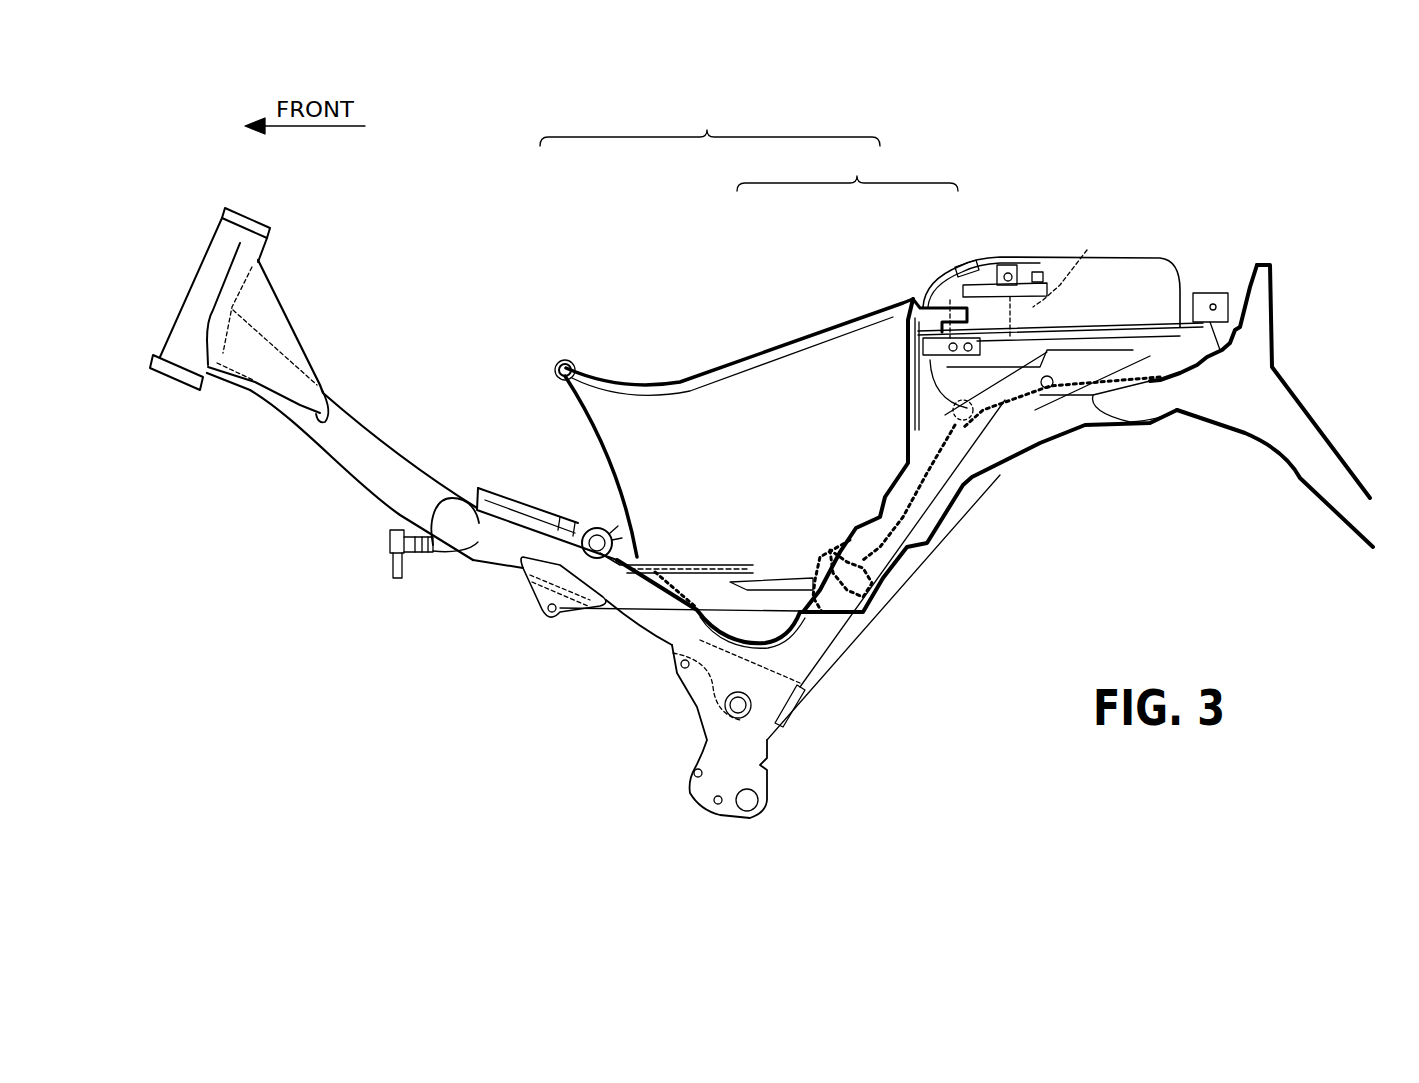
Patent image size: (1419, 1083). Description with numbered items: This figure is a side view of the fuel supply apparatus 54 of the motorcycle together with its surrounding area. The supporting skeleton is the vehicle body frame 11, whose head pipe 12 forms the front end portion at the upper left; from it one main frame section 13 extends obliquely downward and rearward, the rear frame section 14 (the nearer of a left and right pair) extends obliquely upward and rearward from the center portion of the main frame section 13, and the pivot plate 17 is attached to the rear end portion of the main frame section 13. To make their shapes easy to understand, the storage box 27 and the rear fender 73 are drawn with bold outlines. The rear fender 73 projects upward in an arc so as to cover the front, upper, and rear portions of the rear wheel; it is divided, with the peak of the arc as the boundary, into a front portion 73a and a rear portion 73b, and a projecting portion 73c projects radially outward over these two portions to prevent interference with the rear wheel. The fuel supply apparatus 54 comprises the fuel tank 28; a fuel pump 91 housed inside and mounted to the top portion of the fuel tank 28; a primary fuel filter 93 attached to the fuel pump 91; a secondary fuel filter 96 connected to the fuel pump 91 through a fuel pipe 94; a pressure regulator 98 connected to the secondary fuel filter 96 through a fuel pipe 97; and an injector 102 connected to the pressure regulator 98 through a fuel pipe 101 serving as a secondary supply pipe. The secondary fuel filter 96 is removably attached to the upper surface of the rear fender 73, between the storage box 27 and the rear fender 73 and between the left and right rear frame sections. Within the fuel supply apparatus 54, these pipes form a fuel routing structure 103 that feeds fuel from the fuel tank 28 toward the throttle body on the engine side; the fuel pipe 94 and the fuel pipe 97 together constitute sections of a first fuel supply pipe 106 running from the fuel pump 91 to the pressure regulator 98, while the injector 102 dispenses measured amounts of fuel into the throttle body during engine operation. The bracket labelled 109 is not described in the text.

The vehicle body frame 11 is at (212, 226).
The head pipe 12 is at (205, 282).
The main frame section 13 is at (320, 438).
The rear frame section 14 is at (777, 603).
The pivot plate 17 is at (725, 810).
The storage box 27 is at (713, 395).
The fuel tank 28 is at (1153, 277).
The fuel supply apparatus 54 is at (458, 483).
The rear fender 73 is at (1280, 410).
The front portion 73a is at (1000, 470).
The rear portion 73b is at (1285, 463).
The projecting portion 73c is at (903, 457).
The fuel pump 91 is at (1050, 305).
The primary fuel filter 93 is at (1010, 420).
The fuel pipe 94 is at (966, 258).
The secondary fuel filter 96 is at (947, 540).
The fuel pipe 97 is at (688, 553).
The pressure regulator 98 is at (595, 528).
The fuel pipe 101 is at (440, 653).
The injector 102 is at (387, 543).
The fuel routing structure 103 is at (563, 693).
The first fuel supply pipe 106 is at (847, 168).
The stay 109 is at (517, 510).